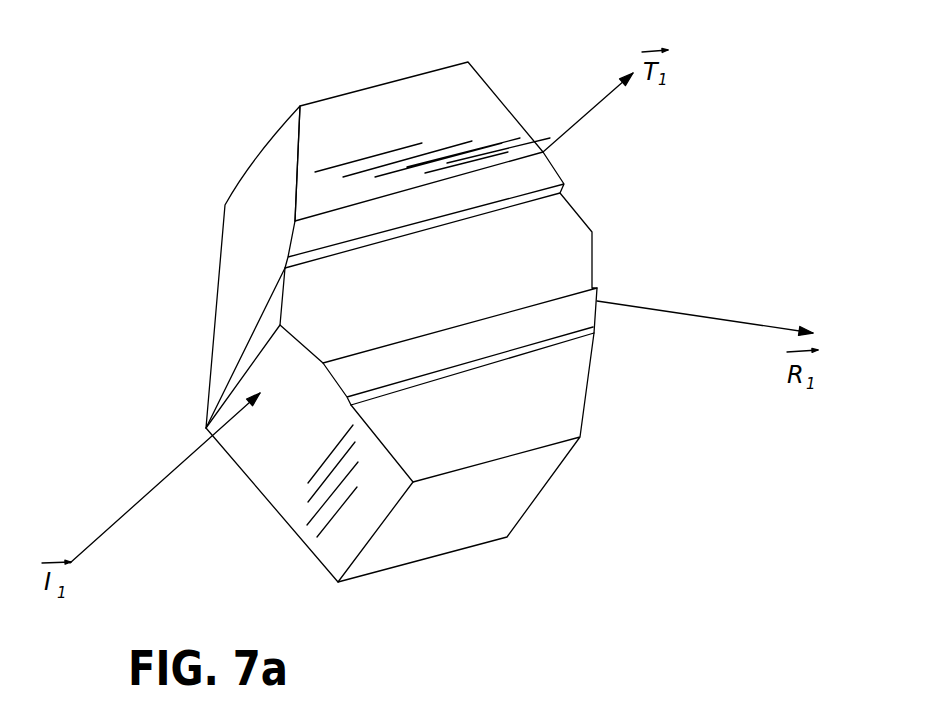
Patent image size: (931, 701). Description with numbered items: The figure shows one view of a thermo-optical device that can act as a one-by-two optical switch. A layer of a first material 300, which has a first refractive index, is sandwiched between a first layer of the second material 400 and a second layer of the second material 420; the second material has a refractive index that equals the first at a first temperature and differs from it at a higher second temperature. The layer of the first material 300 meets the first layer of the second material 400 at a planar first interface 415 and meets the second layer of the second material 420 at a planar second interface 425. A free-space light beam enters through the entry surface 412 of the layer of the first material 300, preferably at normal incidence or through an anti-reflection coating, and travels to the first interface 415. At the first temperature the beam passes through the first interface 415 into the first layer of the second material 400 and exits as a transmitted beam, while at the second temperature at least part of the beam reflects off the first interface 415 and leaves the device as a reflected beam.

The layer of a first material 300 is at (553, 235).
The first layer of the second material 400 is at (448, 97).
The entry surface 412 is at (263, 382).
The first interface 415 is at (238, 337).
The second layer of the second material 420 is at (443, 533).
The second interface 425 is at (243, 477).